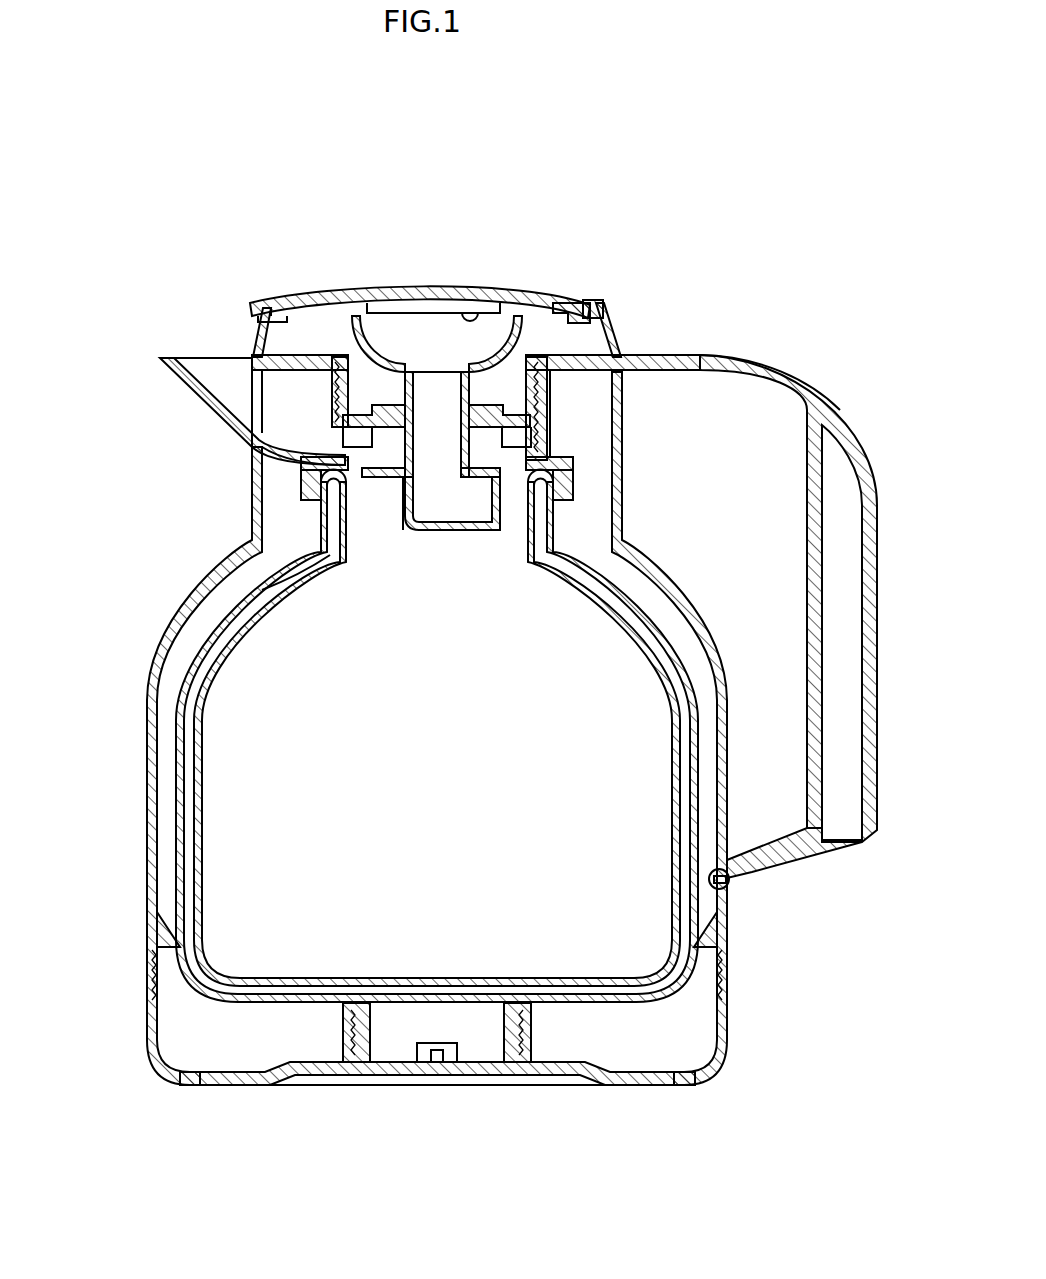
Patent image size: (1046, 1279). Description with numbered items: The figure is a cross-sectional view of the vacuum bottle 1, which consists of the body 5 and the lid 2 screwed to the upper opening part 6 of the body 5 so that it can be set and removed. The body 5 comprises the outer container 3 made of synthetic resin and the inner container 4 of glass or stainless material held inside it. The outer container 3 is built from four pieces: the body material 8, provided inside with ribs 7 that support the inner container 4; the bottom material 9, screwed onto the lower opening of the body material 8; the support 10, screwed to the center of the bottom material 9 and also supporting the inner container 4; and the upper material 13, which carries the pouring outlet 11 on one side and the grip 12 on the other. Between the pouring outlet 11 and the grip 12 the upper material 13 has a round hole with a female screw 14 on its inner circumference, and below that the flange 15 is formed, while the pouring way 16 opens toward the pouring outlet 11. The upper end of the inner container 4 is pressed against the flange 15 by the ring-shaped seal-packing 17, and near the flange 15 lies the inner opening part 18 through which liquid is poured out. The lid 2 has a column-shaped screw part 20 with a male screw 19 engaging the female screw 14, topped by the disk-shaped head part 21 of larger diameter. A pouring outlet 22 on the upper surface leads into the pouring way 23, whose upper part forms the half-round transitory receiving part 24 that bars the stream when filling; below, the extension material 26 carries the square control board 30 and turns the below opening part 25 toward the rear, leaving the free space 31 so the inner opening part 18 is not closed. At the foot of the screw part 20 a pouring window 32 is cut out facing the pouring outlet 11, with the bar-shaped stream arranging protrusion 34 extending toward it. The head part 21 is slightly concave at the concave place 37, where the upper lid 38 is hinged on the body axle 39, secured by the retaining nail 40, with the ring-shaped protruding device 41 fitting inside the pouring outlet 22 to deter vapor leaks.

The vacuum bottle 1 is at (758, 204).
The lid 2 is at (616, 331).
The outer container 3 is at (146, 803).
The inner container 4 is at (178, 877).
The body 5 is at (70, 797).
The upper opening part 6 is at (343, 352).
The ribs 7 is at (185, 637).
The body material 8 is at (150, 713).
The bottom material 9 is at (262, 1086).
The support 10 is at (478, 1080).
The pouring outlet 11 is at (199, 372).
The grip 12 is at (875, 505).
The upper material 13 is at (707, 360).
The female screw 14 is at (330, 395).
The flange 15 is at (267, 444).
The pouring way 16 is at (327, 433).
The seal-packing 17 is at (313, 478).
The inner opening part 18 is at (350, 545).
The male screw 19 is at (534, 352).
The screw part 20 is at (527, 438).
The head part 21 is at (620, 348).
The pouring outlet 22 is at (368, 291).
The pouring way 23 is at (419, 447).
The transitory receiving part 24 is at (429, 332).
The below opening part 25 is at (502, 503).
The extension material 26 is at (437, 533).
The control board 30 is at (403, 480).
The free space 31 is at (380, 470).
The pouring window 32 is at (343, 443).
The stream arranging protrusion 34 is at (367, 470).
The concave place 37 is at (315, 292).
The upper lid 38 is at (474, 289).
The body axle 39 is at (590, 302).
The retaining nail 40 is at (272, 303).
The protruding device 41 is at (481, 313).